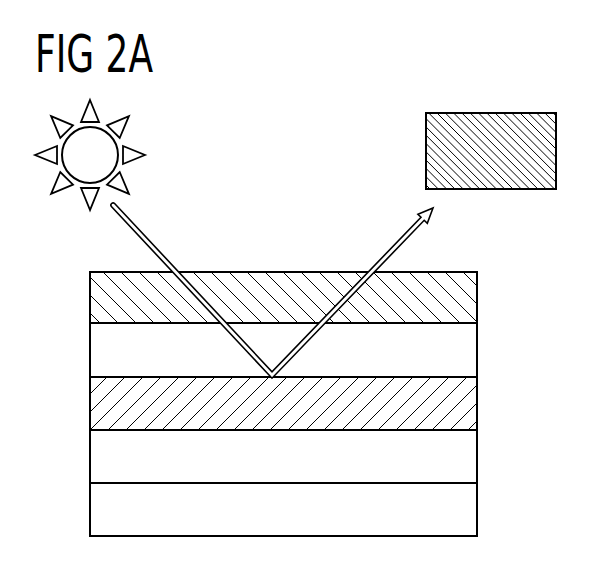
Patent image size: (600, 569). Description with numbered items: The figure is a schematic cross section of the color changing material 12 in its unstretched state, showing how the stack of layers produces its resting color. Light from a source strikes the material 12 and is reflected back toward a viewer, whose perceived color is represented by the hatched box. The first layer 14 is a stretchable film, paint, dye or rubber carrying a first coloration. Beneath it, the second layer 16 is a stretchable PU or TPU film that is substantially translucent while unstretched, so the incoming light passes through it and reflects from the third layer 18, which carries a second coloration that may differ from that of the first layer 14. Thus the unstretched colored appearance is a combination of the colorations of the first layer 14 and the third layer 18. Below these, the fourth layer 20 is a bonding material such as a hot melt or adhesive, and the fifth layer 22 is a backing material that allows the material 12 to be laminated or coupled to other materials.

The color changing material 12 is at (466, 271).
The first layer 14 is at (102, 294).
The second layer 16 is at (103, 353).
The third layer 18 is at (103, 404).
The fourth layer 20 is at (105, 459).
The fifth layer 22 is at (105, 510).